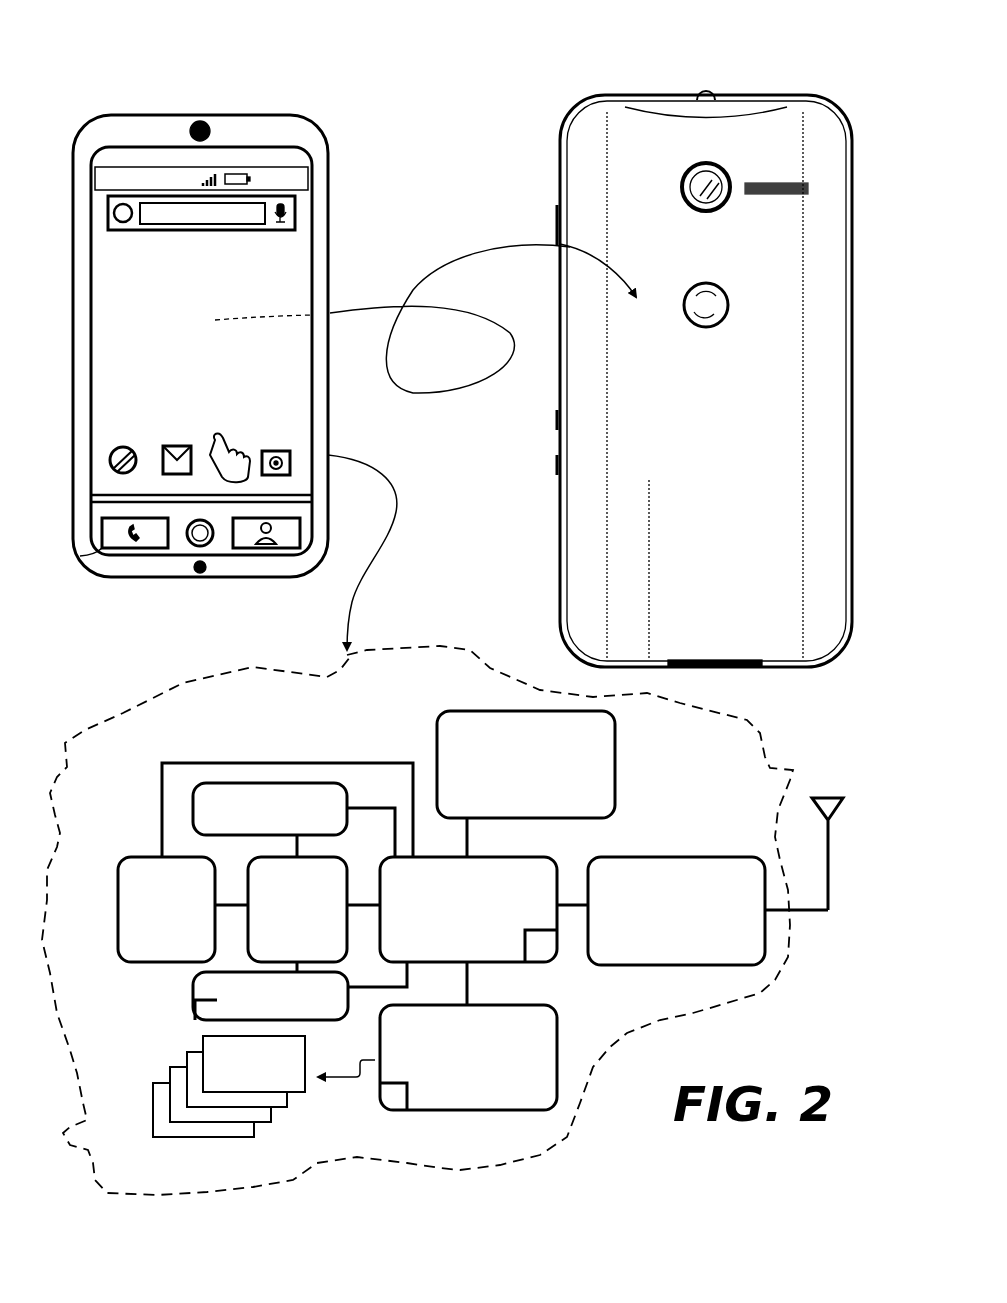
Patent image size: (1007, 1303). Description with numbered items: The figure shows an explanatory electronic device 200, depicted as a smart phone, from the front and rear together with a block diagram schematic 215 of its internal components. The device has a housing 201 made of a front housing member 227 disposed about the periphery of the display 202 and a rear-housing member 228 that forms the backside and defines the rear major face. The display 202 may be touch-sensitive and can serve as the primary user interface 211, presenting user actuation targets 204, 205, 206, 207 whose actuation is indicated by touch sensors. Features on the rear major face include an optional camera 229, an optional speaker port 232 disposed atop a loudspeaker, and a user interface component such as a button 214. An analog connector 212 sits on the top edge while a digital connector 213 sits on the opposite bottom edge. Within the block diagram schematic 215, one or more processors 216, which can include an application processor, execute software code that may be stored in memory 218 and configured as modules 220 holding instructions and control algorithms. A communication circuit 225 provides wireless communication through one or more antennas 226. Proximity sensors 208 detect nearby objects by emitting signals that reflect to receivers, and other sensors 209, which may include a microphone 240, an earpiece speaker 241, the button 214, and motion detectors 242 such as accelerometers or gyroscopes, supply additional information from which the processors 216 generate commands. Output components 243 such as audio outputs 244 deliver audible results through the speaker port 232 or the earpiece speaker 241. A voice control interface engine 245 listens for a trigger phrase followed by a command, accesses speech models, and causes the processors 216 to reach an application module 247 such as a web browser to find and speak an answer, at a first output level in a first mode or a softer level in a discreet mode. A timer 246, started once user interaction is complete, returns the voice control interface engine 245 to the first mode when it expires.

The electronic device 200 is at (535, 202).
The housing 201 is at (321, 392).
The display 202 is at (118, 320).
The user actuation target 204 is at (126, 447).
The user actuation target 205 is at (180, 445).
The user actuation target 206 is at (232, 445).
The user actuation target 207 is at (278, 451).
The proximity sensors 208 is at (232, 783).
The other sensors 209 is at (313, 1020).
The primary user interface 211 is at (618, 763).
The connector 212 is at (706, 95).
The connector 213 is at (742, 667).
The button 214 is at (704, 320).
The block diagram schematic 215 is at (780, 772).
The processors 216 is at (520, 857).
The memory 218 is at (557, 1045).
The modules 220 is at (150, 1042).
The communication circuit 225 is at (690, 857).
The antennas 226 is at (843, 800).
The front housing member 227 is at (85, 540).
The rear-housing member 228 is at (598, 433).
The camera 229 is at (692, 185).
The speaker port 232 is at (783, 196).
The microphone 240 is at (205, 575).
The earpiece speaker 241 is at (205, 122).
The motion detectors 242 is at (200, 1010).
The output components 243 is at (118, 960).
The audio outputs 244 is at (145, 880).
The voice control interface engine 245 is at (347, 867).
The timer 246 is at (540, 945).
The application module 247 is at (258, 1145).